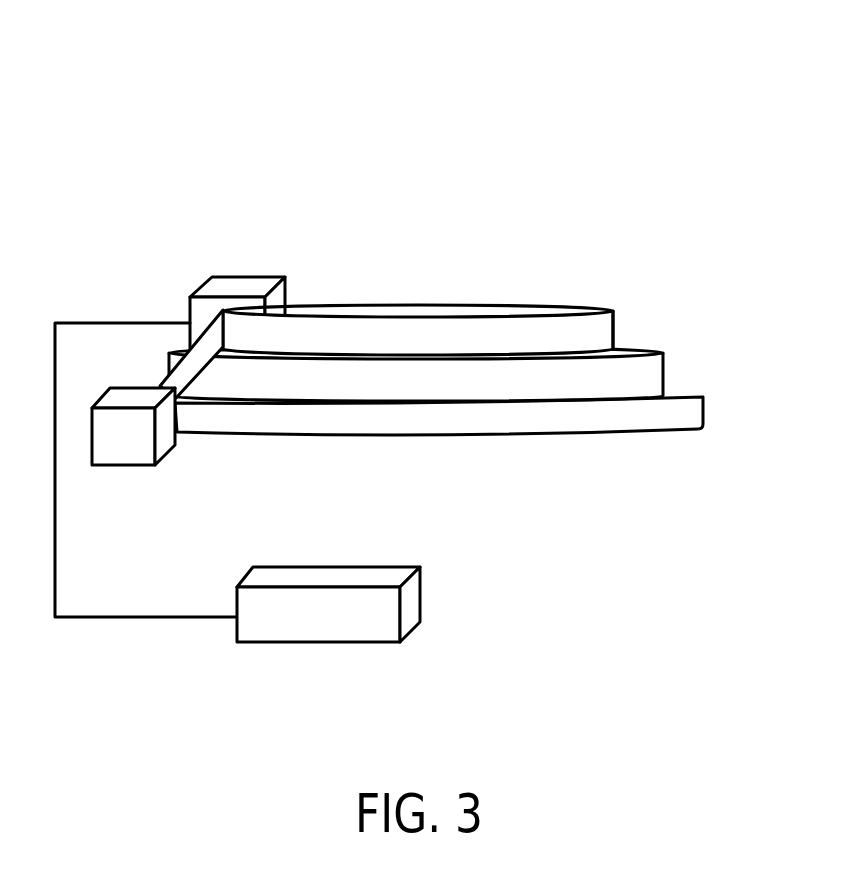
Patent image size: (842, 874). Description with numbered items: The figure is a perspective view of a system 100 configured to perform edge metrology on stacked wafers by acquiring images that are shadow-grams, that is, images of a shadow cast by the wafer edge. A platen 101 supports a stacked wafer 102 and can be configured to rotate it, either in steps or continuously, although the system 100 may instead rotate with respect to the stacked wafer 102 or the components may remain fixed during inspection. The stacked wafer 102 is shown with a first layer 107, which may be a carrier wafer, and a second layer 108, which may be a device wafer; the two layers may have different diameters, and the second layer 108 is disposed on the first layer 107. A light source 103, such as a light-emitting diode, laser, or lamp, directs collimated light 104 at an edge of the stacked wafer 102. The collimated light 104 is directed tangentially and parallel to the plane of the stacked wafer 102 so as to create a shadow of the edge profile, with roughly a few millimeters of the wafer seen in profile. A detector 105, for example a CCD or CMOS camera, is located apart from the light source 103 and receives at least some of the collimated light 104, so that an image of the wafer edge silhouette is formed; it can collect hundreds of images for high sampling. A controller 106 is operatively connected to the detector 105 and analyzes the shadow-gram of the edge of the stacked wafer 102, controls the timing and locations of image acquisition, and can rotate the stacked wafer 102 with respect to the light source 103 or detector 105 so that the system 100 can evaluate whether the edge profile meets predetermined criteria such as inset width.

The system 100 is at (618, 150).
The platen 101 is at (592, 417).
The stacked wafer 102 is at (407, 308).
The light source 103 is at (172, 445).
The collimated light 104 is at (177, 356).
The detector 105 is at (223, 285).
The controller 106 is at (412, 610).
The first layer 107 is at (650, 368).
The second layer 108 is at (615, 330).